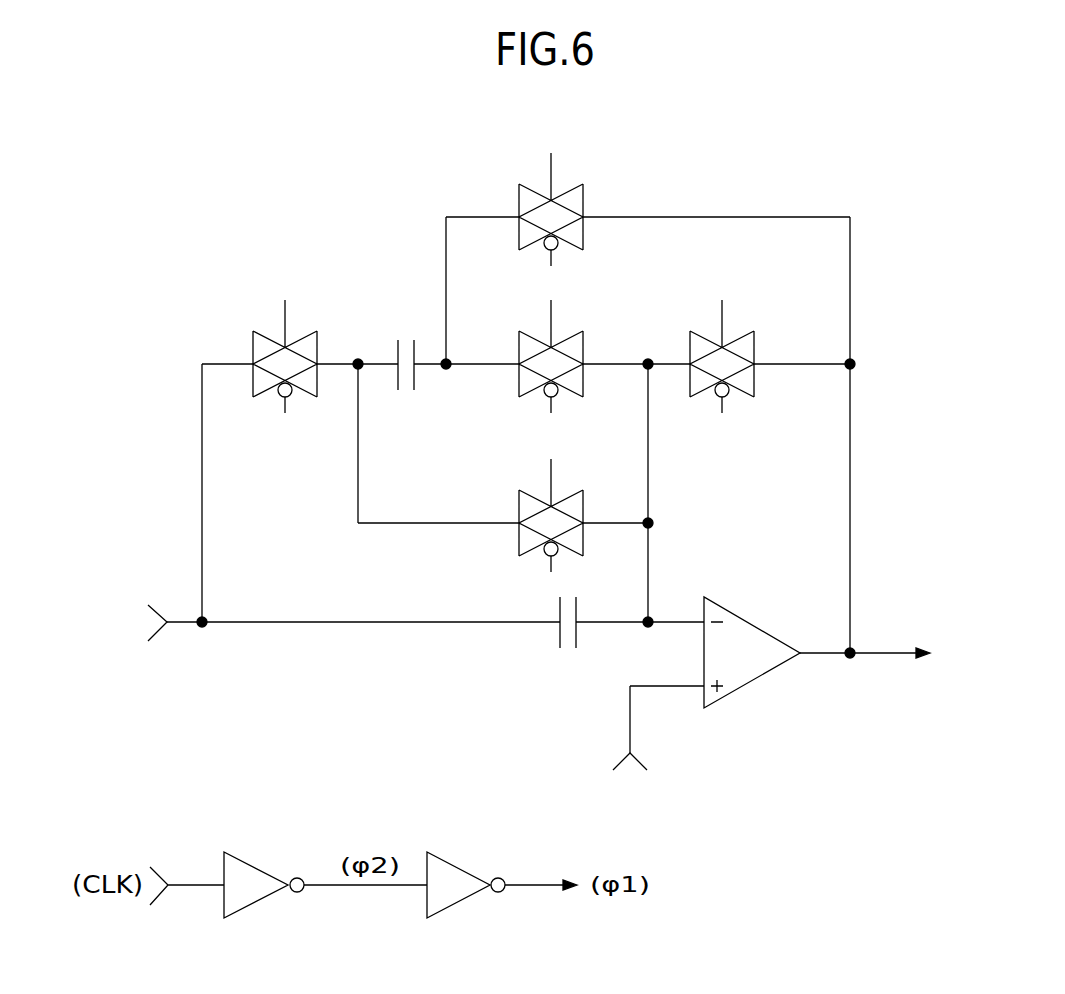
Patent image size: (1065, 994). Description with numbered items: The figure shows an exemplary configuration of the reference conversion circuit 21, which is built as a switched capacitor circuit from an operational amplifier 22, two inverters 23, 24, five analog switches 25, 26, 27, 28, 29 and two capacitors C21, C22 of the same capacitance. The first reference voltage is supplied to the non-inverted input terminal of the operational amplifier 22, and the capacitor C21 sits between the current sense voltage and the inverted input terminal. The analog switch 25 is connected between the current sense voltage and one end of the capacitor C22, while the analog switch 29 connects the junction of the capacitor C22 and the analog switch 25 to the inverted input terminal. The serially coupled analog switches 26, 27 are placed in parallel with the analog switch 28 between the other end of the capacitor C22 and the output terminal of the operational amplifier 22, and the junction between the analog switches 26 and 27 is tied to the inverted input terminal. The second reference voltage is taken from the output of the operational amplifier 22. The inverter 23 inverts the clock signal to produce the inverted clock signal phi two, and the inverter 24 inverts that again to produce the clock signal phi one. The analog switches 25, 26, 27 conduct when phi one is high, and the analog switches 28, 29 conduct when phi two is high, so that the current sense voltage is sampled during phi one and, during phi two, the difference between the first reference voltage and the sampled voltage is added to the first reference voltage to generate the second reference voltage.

The reference conversion circuit 21 is at (884, 176).
The operational amplifier 22 is at (748, 620).
The inverter 23 is at (262, 866).
The inverter 24 is at (464, 866).
The analog switch 25 is at (317, 339).
The analog switch 26 is at (583, 338).
The analog switch 27 is at (754, 338).
The analog switch 28 is at (583, 195).
The analog switch 29 is at (519, 541).
The capacitor C21 is at (567, 640).
The capacitor C22 is at (410, 381).